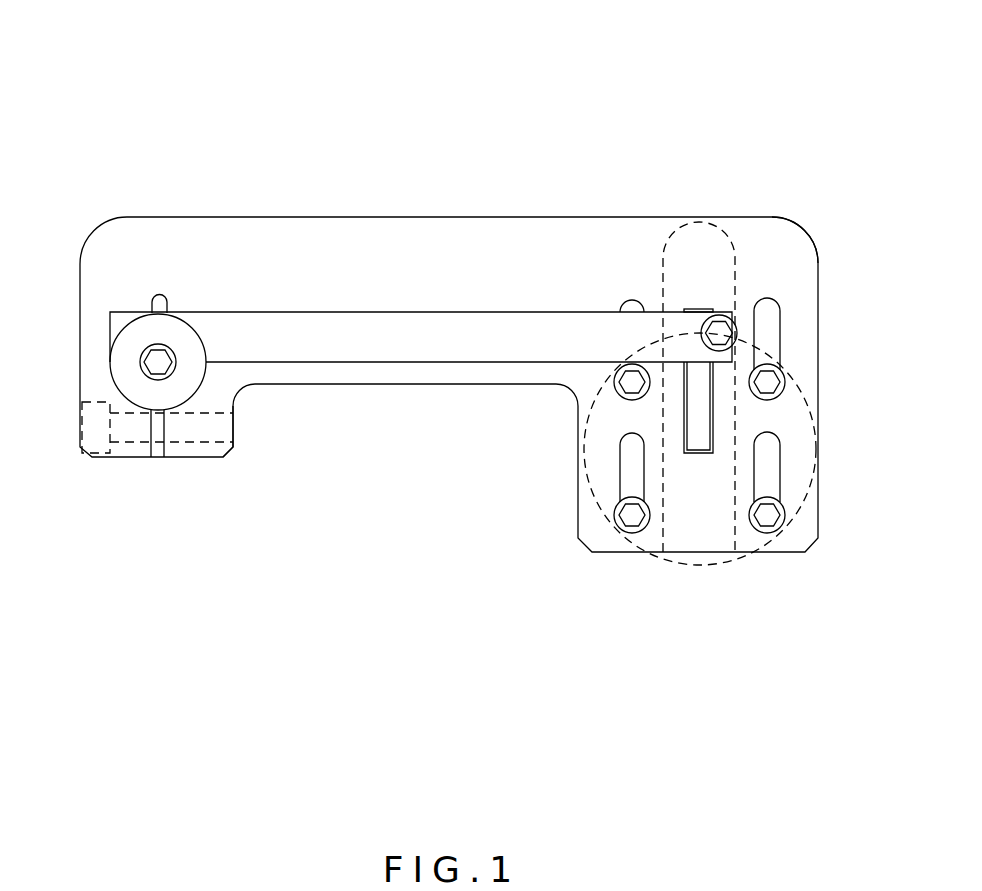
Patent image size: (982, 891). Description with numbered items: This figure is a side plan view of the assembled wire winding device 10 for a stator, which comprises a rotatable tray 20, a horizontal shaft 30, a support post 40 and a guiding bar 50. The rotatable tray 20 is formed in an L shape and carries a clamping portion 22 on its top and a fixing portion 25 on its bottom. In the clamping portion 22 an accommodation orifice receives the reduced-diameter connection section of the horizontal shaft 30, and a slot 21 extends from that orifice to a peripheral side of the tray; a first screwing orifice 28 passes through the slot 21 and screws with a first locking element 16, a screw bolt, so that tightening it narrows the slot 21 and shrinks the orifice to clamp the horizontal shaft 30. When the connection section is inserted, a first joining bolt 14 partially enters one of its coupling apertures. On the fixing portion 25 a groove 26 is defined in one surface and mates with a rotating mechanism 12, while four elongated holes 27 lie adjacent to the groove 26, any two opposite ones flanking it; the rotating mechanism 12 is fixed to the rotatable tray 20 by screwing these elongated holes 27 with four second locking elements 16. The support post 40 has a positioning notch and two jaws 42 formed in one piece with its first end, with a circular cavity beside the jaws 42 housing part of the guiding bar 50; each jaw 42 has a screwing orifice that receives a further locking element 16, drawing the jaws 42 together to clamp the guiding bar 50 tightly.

The wire winding device 10 is at (514, 100).
The rotating mechanism 12 is at (700, 565).
The first joining bolt 14 is at (160, 297).
The locking element 16 is at (632, 515).
The rotatable tray 20 is at (377, 250).
The slot 21 is at (157, 458).
The clamping portion 22 is at (223, 388).
The fixing portion 25 is at (772, 265).
The groove 26 is at (662, 255).
The elongated holes 27 is at (628, 465).
The first screwing orifice 28 is at (203, 438).
The horizontal shaft 30 is at (148, 347).
The support post 40 is at (443, 343).
The jaws 42 is at (733, 315).
The guiding bar 50 is at (702, 432).